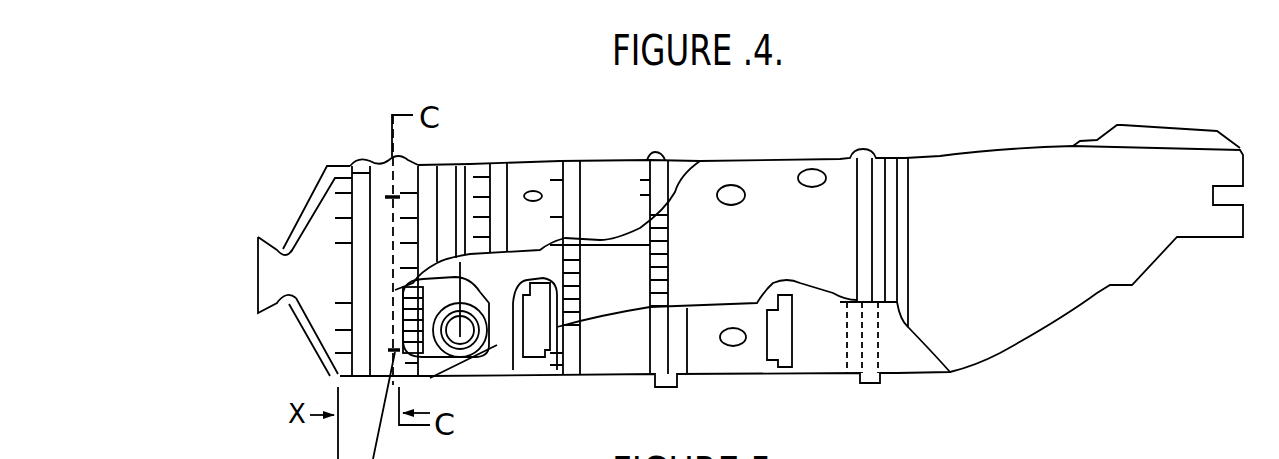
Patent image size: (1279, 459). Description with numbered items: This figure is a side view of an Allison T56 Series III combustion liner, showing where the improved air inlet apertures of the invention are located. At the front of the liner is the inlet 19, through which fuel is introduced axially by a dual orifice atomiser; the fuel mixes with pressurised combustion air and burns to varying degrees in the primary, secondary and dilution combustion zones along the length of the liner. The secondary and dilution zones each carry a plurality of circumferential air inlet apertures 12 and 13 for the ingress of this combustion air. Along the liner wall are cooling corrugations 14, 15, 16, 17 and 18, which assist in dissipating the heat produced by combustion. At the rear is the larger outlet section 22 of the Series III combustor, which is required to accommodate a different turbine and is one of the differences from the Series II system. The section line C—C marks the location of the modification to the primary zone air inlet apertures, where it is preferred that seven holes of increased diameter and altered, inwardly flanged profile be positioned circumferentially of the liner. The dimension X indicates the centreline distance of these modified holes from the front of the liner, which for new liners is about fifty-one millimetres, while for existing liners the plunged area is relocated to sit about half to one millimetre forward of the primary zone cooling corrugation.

The air inlet apertures 12 is at (533, 191).
The air inlet apertures 13 is at (740, 346).
The cooling corrugation 14 is at (317, 197).
The cooling corrugation 15 is at (370, 162).
The cooling corrugation 16 is at (477, 162).
The cooling corrugation 17 is at (570, 157).
The cooling corrugation 18 is at (661, 155).
The inlet 19 is at (253, 237).
The outlet section 22 is at (1205, 131).